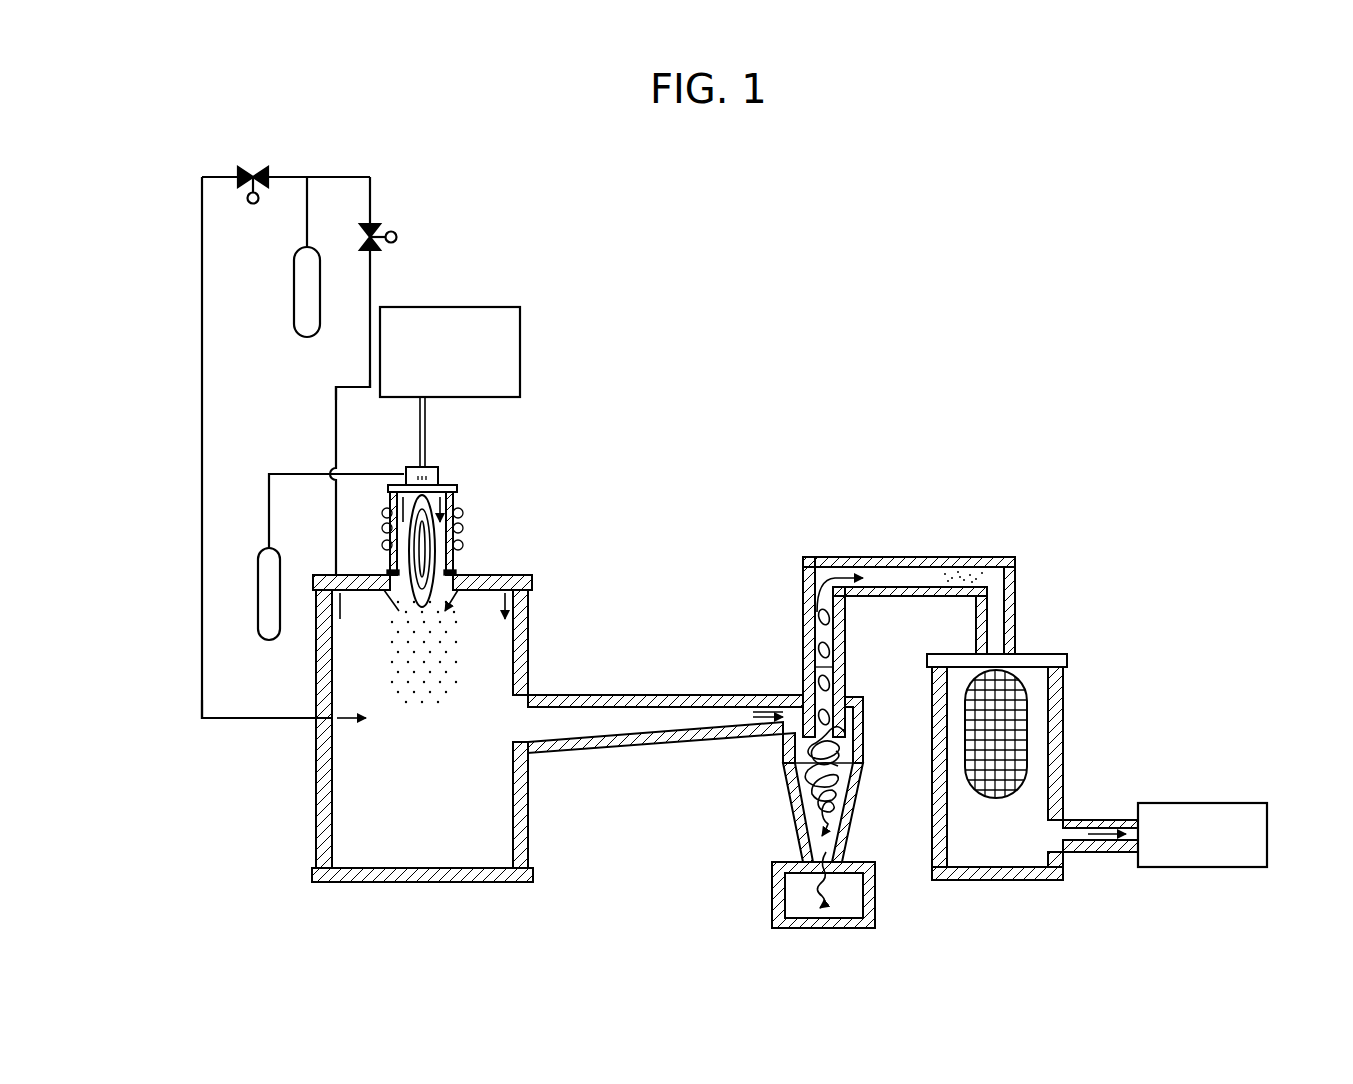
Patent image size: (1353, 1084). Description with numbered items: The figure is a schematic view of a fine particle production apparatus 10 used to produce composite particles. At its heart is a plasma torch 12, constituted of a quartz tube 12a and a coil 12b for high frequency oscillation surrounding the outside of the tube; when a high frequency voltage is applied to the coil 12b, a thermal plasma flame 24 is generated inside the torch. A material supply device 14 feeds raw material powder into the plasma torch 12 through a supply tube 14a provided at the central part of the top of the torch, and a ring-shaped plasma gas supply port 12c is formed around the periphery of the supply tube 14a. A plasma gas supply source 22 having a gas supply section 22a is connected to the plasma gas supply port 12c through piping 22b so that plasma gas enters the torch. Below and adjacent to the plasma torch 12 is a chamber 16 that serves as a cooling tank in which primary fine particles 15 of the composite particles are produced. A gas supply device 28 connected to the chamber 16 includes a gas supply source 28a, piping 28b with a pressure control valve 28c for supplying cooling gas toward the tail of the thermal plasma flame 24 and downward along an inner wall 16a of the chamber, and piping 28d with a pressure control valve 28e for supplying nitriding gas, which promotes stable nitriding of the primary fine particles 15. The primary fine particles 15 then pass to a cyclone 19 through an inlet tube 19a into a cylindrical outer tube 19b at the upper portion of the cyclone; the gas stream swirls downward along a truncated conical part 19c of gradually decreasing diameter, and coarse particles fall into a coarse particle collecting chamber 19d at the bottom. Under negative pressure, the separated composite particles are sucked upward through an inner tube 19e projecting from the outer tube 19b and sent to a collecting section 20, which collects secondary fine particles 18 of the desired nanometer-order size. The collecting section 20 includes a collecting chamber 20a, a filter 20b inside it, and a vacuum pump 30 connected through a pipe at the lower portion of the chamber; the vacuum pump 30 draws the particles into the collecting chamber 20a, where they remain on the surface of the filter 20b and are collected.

The production apparatus 10 is at (832, 272).
The plasma torch 12 is at (432, 525).
The quartz tube 12a is at (455, 556).
The coil for high frequency oscillation 12b is at (464, 528).
The plasma gas supply port 12c is at (440, 483).
The material supply device 14 is at (521, 347).
The supply tube 14a is at (418, 432).
The primary fine particles 15 is at (475, 660).
The chamber 16 is at (462, 728).
The inner wall 16a is at (522, 848).
The secondary fine particles 18 is at (909, 572).
The cyclone 19 is at (730, 742).
The inlet tube 19a is at (790, 737).
The outer tube 19b is at (853, 722).
The truncated conical part 19c is at (855, 812).
The coarse particle collecting chamber 19d is at (873, 898).
The inner tube 19e is at (846, 673).
The collecting section 20 is at (1032, 739).
The collecting chamber 20a is at (1022, 800).
The filter 20b is at (1030, 736).
The plasma gas supply source 22 is at (318, 555).
The gas supply section 22a is at (268, 642).
The piping 22b is at (305, 472).
The thermal plasma flame 24 is at (400, 553).
The gas supply device 28 is at (282, 412).
The gas supply source 28a is at (294, 326).
The piping 28b is at (345, 386).
The pressure control valve 28c is at (380, 225).
The piping 28d is at (202, 330).
The pressure control valve 28e is at (253, 166).
The vacuum pump 30 is at (1150, 800).